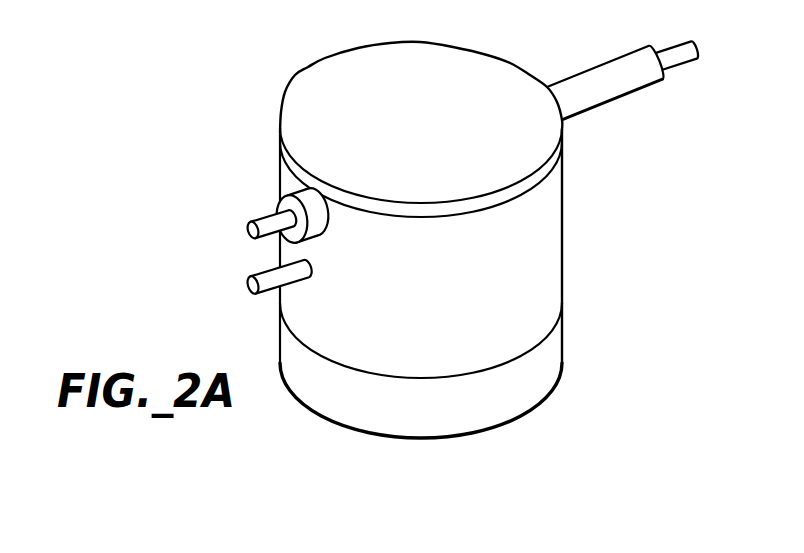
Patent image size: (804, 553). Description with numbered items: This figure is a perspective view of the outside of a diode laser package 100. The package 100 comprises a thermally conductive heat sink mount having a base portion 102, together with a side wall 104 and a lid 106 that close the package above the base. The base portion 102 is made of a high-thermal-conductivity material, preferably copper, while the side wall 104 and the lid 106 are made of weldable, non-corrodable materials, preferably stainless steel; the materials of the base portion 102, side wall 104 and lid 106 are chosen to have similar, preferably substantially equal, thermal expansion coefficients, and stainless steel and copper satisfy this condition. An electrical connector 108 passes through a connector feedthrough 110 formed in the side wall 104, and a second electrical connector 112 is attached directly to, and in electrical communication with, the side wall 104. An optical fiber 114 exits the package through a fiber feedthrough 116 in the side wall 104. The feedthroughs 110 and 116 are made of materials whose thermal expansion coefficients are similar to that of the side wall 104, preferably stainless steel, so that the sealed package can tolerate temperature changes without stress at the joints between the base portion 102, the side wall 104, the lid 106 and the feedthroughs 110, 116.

The package 100 is at (313, 44).
The base portion 102 is at (547, 349).
The side wall 104 is at (547, 269).
The lid 106 is at (501, 75).
The electrical connector 108 is at (261, 220).
The connector feedthrough 110 is at (295, 188).
The electrical connector 112 is at (262, 274).
The optical fiber 114 is at (692, 62).
The fiber feedthrough 116 is at (628, 97).